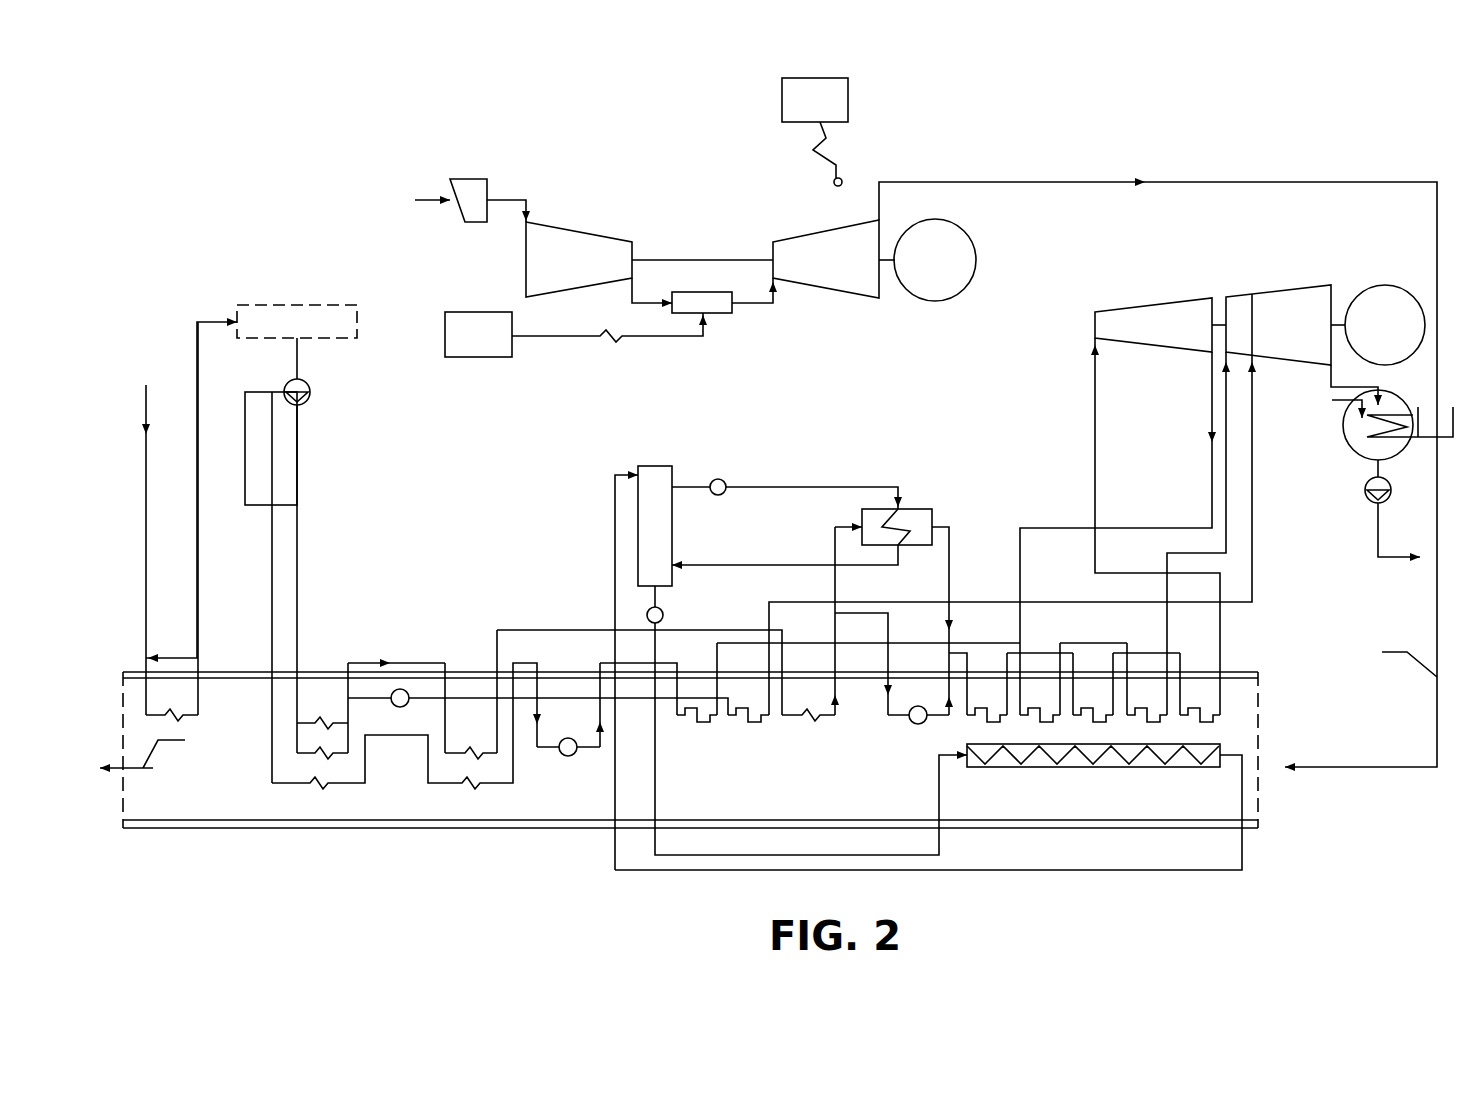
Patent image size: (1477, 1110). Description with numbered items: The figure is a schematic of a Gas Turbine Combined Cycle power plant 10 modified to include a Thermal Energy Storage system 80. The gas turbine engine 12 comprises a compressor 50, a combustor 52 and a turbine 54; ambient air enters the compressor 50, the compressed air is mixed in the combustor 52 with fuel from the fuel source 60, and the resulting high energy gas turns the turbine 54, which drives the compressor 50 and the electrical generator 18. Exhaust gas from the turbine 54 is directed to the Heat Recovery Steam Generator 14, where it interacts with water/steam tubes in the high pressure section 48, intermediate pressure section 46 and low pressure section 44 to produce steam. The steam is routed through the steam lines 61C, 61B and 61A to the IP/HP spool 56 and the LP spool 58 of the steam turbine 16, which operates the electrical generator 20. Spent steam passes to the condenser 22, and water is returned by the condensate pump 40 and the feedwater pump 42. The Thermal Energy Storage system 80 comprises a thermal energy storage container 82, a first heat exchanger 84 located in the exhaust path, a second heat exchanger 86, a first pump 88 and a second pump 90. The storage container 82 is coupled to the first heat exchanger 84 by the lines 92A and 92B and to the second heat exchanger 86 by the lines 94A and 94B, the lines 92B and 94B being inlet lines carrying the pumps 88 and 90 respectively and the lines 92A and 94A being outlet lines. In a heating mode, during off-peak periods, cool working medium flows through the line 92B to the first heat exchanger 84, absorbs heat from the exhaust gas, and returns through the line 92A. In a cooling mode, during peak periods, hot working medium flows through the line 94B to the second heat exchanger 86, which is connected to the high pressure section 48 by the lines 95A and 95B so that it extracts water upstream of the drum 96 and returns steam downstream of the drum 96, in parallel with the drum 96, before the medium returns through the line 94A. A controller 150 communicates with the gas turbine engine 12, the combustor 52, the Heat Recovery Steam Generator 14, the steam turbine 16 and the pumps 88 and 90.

The Gas Turbine Combined Cycle power plant 10 is at (1392, 116).
The gas turbine engine 12 is at (716, 228).
The Heat Recovery Steam Generator 14 is at (363, 868).
The steam turbine 16 is at (1222, 290).
The electrical generator 18 is at (955, 230).
The electrical generator 20 is at (1390, 286).
The condenser 22 is at (1410, 403).
The condensate pump 40 is at (1370, 500).
The feedwater pump 42 is at (309, 386).
The low pressure section 44 is at (403, 686).
The intermediate pressure section 46 is at (565, 764).
The high pressure section 48 is at (883, 737).
The compressor 50 is at (600, 228).
The combustor 52 is at (732, 313).
The turbine 54 is at (826, 232).
The IP/HP spool 56 is at (1162, 310).
The LP spool 58 is at (1300, 290).
The fuel source 60 is at (480, 312).
The steam line 61A is at (1254, 408).
The steam line 61B is at (1228, 447).
The steam line 61C is at (1093, 428).
The Thermal Energy Storage system 80 is at (918, 395).
The thermal energy storage container 82 is at (655, 466).
The first heat exchanger 84 is at (1092, 767).
The second heat exchanger 86 is at (932, 511).
The first pump 88 is at (645, 614).
The second pump 90 is at (718, 479).
The line 92A is at (1244, 857).
The line 92B is at (943, 787).
The line 94A is at (765, 565).
The line 94B is at (800, 487).
The line 95A is at (949, 553).
The line 95B is at (836, 588).
The drum 96 is at (918, 724).
The controller 150 is at (782, 100).